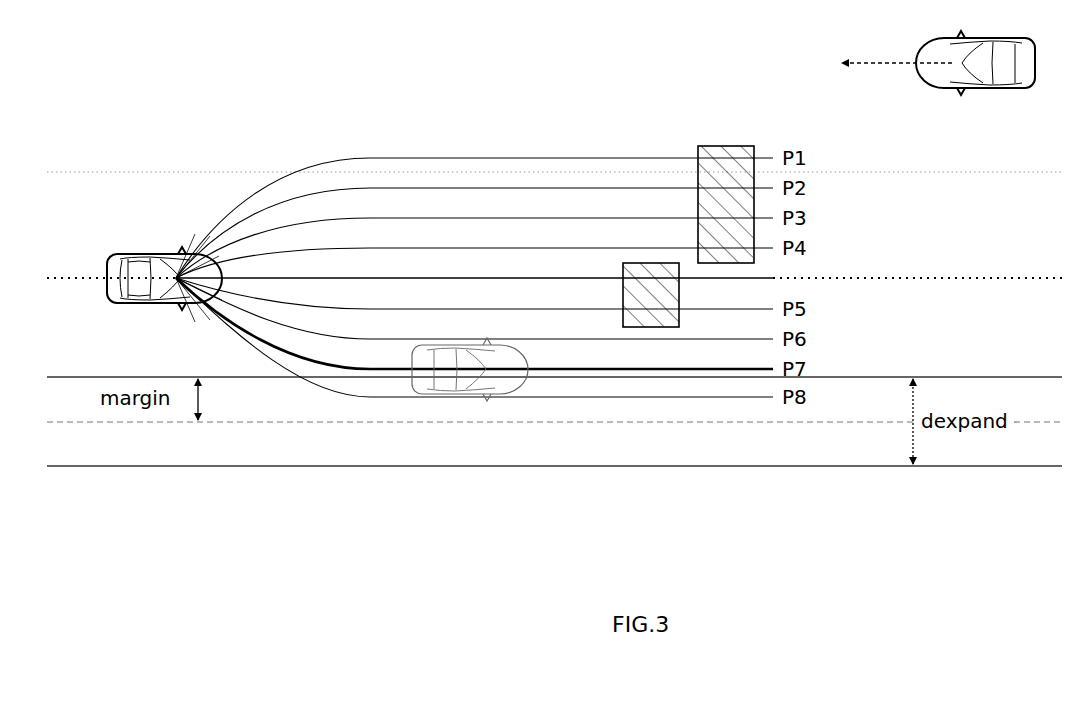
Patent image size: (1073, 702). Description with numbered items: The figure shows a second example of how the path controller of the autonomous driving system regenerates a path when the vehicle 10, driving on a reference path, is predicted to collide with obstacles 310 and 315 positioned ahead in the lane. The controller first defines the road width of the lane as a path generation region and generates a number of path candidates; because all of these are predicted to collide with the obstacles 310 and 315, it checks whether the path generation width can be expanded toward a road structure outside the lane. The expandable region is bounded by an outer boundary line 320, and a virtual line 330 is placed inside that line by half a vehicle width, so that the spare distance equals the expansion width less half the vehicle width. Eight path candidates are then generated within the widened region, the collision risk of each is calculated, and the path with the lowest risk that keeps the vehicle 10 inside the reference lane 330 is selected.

The vehicle 10 is at (160, 253).
The obstacle 310 is at (725, 146).
The obstacle 315 is at (650, 263).
The outer boundary line 320 is at (343, 467).
The virtual line 330 is at (268, 424).